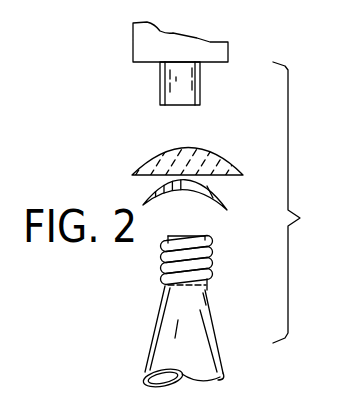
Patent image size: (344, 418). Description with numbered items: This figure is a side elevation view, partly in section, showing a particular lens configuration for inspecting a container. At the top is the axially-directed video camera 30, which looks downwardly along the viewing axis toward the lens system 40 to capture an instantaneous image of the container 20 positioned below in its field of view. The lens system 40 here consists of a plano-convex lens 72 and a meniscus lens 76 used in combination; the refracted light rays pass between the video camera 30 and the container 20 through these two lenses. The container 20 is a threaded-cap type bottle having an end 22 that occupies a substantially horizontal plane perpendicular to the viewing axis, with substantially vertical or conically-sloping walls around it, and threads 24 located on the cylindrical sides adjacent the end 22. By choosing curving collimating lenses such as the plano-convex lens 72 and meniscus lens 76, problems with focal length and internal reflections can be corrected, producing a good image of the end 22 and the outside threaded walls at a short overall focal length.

The container 20 is at (205, 308).
The end 22 is at (208, 240).
The threads 24 is at (208, 275).
The video camera 30 is at (181, 45).
The lens system 40 is at (127, 163).
The plano-convex lens 72 is at (226, 163).
The meniscus lens 76 is at (222, 194).